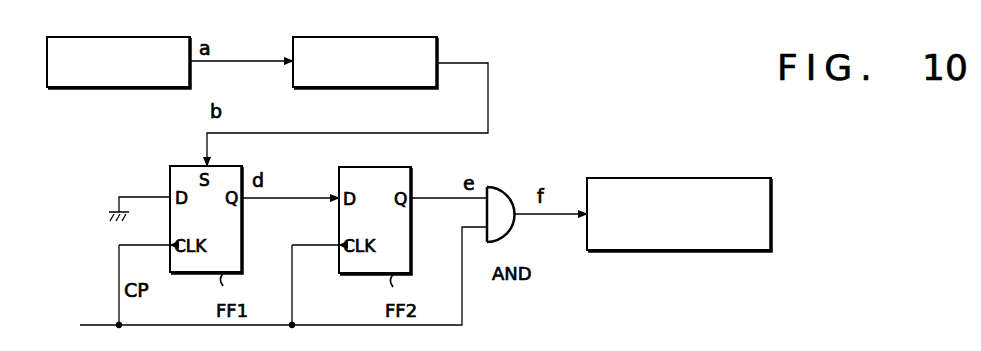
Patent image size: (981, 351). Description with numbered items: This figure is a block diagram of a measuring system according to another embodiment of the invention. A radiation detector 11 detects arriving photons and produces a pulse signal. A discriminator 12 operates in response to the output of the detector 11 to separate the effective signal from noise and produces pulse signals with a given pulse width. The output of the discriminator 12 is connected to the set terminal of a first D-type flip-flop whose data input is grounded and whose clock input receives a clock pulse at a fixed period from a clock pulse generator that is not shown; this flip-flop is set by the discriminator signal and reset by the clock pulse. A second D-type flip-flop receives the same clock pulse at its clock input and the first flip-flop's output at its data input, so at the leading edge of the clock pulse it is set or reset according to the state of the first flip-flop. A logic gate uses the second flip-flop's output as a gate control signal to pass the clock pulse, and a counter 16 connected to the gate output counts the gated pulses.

The radiation detector 11 is at (70, 86).
The discriminator 12 is at (322, 86).
The counter 16 is at (765, 232).